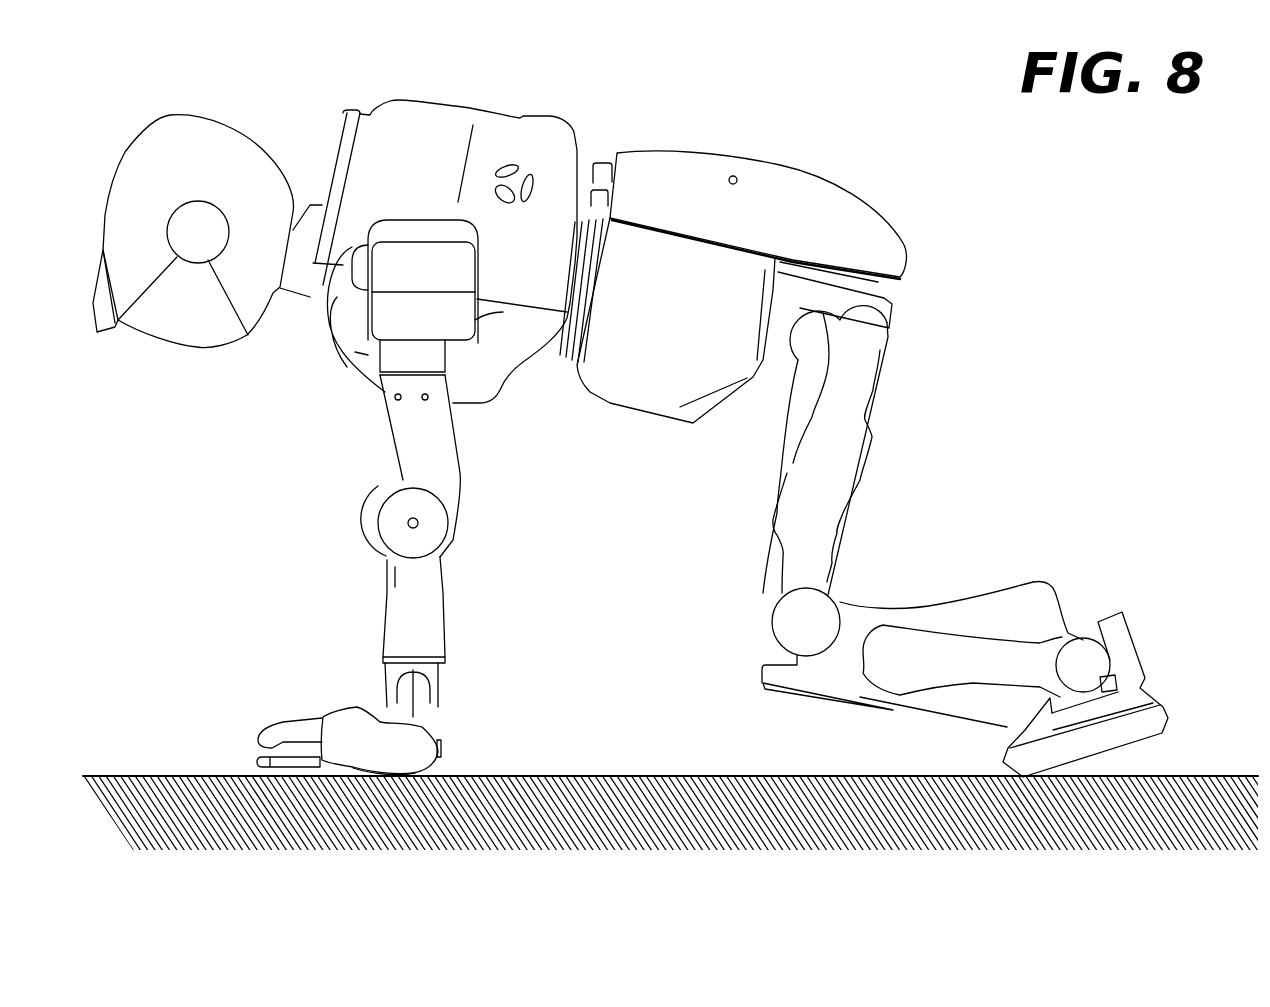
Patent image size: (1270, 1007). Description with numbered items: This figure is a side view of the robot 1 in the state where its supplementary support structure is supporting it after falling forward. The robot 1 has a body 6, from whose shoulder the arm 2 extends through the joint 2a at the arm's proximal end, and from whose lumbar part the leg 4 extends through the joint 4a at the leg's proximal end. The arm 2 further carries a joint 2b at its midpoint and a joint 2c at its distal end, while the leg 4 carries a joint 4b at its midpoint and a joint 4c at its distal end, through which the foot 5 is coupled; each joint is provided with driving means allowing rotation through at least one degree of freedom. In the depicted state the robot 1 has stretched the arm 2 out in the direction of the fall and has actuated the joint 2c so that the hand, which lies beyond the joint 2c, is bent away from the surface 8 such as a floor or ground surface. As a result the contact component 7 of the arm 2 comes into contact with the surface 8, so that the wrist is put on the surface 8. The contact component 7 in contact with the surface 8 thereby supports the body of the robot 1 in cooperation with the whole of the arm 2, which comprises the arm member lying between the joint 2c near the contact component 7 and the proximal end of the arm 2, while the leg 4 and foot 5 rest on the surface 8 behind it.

The robot 1 is at (808, 158).
The arm 2 is at (360, 529).
The joint 2a is at (388, 272).
The joint 2b is at (433, 523).
The joint 2c is at (440, 733).
The leg 4 is at (884, 455).
The joint 4a is at (866, 347).
The joint 4b is at (795, 620).
The joint 4c is at (1073, 660).
The foot 5 is at (1125, 733).
The body 6 is at (596, 404).
The contact component 7 is at (427, 797).
The surface 8 is at (623, 777).